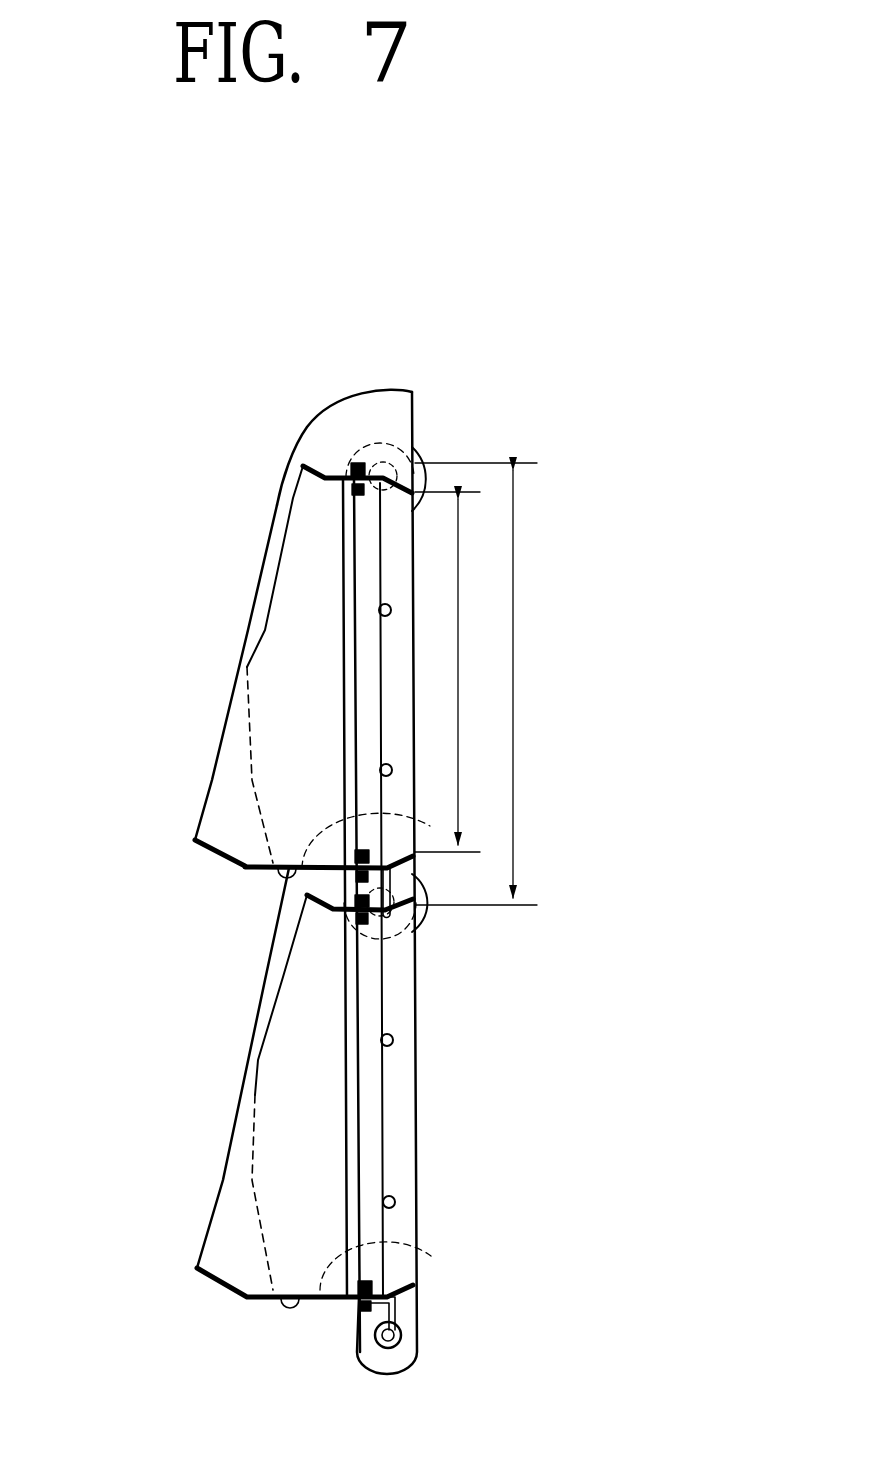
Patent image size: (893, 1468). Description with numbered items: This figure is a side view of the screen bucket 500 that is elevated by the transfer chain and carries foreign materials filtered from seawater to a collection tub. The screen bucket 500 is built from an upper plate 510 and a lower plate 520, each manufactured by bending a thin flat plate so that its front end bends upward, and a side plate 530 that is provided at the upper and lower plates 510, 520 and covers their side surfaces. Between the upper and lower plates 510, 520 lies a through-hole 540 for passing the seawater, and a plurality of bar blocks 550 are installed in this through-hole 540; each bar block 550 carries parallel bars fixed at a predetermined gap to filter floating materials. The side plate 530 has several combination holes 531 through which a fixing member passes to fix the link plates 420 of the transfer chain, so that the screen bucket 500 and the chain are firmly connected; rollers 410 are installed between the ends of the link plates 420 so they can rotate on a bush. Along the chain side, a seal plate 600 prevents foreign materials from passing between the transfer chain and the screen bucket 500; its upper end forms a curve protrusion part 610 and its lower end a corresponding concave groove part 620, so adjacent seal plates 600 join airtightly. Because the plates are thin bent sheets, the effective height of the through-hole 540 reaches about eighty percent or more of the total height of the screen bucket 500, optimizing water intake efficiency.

The screen bucket 500 is at (128, 598).
The upper plate 510 is at (305, 462).
The lower plate 520 is at (195, 840).
The side plate 530 is at (235, 762).
The combination hole 531 is at (380, 766).
The through-hole 540 is at (347, 1046).
The bar block 550 is at (370, 1142).
The seal plate 600 is at (403, 440).
The curve protrusion part 610 is at (381, 388).
The concave groove part 620 is at (372, 1253).
The roller 410 is at (430, 905).
The link plate 420 is at (413, 1337).